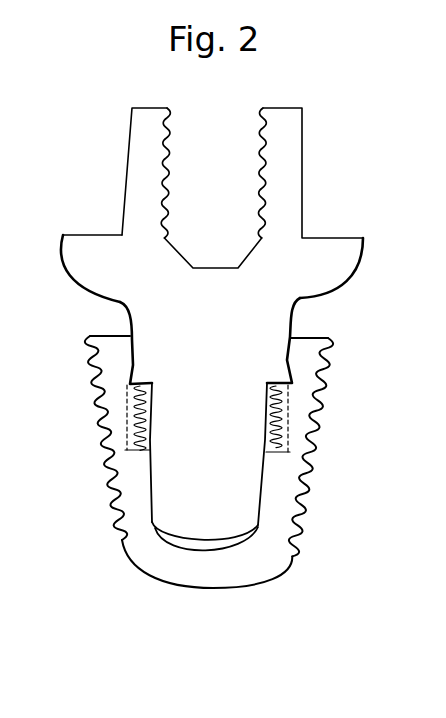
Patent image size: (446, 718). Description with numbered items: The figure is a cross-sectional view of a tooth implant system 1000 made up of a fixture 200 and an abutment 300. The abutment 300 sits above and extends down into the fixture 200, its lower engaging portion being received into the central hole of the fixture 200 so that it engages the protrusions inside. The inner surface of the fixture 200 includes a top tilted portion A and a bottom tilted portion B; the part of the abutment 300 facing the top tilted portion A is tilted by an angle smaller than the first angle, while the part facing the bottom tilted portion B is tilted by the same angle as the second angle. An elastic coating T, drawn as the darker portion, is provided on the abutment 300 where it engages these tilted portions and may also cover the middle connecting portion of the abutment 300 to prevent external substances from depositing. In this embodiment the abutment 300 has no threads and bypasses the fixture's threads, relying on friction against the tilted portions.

The tooth implant system 1000 is at (224, 378).
The abutment 300 is at (224, 316).
The fixture 200 is at (209, 518).
The elastic coating T is at (357, 272).
The top tilted portion A is at (279, 333).
The bottom tilted portion B is at (254, 486).